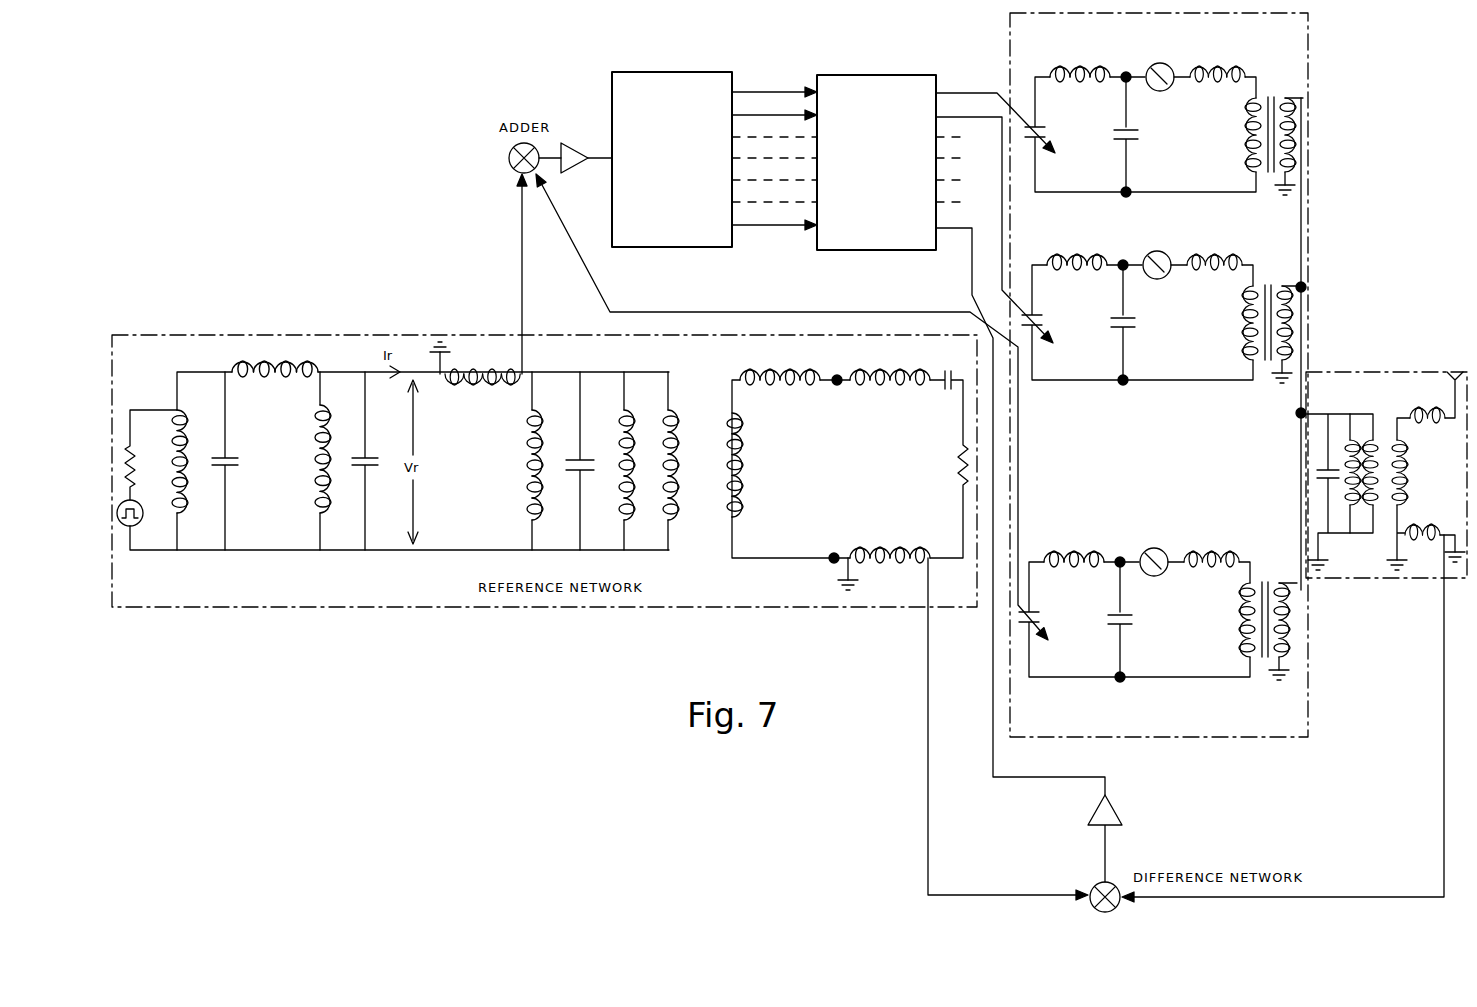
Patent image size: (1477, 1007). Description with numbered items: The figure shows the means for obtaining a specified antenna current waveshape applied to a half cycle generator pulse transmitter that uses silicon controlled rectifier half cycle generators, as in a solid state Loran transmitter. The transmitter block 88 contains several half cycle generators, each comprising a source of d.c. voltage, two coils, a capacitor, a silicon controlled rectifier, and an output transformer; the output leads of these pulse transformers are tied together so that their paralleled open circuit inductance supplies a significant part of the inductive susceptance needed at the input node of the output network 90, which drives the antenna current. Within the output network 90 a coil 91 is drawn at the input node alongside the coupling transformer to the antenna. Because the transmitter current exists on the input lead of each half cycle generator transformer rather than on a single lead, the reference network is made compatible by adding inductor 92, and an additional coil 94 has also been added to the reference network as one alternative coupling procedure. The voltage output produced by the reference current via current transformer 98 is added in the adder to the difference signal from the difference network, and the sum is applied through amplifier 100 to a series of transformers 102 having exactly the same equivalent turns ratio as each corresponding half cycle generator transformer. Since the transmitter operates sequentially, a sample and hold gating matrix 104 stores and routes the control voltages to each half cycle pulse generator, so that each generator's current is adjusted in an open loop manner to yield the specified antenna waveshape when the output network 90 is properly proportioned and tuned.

The transmitter block 88 is at (1311, 70).
The output network 90 is at (1381, 461).
The inductor 91 is at (1347, 473).
The inductor 92 is at (541, 446).
The additional coil 94 is at (633, 446).
The current transformer 98 is at (495, 388).
The amplifier 100 is at (568, 148).
The series of transformers 102 is at (662, 72).
The sample and hold gating matrix 104 is at (850, 74).